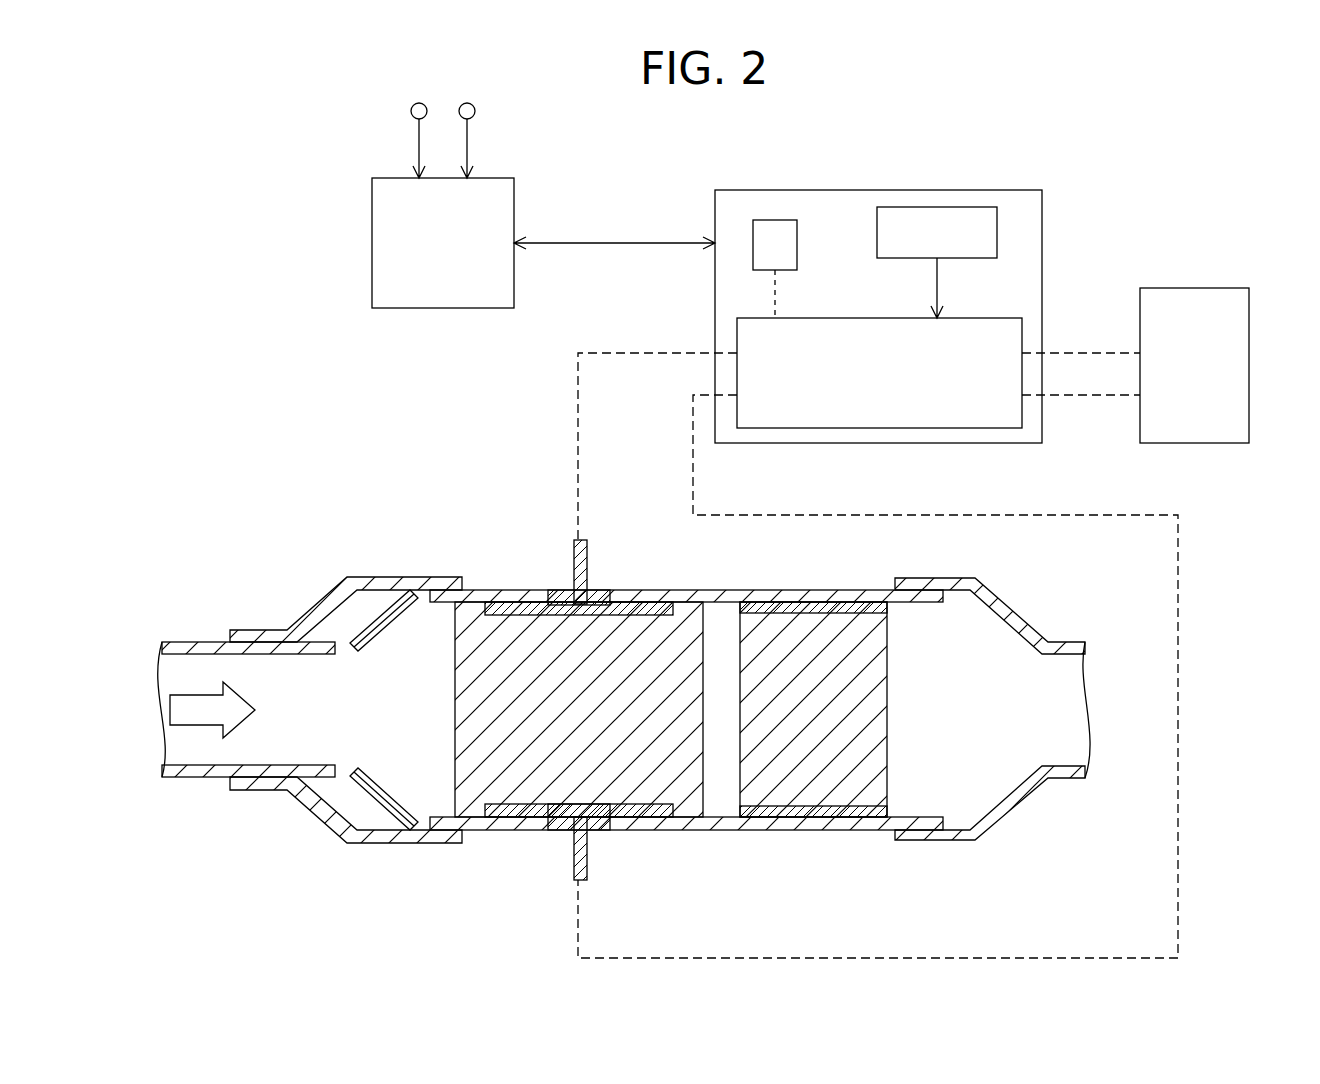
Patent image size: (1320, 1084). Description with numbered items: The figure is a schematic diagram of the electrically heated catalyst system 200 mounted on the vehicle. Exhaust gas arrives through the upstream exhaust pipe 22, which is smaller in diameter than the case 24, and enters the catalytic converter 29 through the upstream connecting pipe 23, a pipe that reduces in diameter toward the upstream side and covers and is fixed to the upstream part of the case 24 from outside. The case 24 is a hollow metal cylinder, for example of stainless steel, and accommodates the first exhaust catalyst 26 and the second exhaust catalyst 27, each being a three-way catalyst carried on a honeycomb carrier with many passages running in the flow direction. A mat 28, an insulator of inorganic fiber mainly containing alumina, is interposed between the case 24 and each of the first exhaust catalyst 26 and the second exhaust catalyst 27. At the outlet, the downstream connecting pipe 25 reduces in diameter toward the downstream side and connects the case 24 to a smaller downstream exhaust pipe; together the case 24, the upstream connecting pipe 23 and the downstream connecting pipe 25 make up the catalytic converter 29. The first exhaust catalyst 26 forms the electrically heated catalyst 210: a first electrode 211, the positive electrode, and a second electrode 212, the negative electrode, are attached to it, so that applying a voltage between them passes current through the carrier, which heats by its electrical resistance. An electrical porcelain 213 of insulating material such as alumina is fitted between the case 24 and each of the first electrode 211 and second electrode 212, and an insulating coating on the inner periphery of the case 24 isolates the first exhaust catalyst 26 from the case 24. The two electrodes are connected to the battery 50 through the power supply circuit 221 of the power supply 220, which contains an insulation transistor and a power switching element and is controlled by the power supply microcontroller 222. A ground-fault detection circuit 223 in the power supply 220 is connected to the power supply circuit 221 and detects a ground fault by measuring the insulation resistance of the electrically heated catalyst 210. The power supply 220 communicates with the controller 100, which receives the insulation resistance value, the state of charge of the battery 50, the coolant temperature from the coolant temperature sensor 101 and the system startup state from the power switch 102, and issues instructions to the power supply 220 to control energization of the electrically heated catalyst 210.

The upstream exhaust pipe 22 is at (190, 640).
The upstream connecting pipe 23 is at (315, 820).
The case 24 is at (745, 830).
The downstream connecting pipe 25 is at (1005, 815).
The first exhaust catalyst 26 is at (455, 640).
The second exhaust catalyst 27 is at (885, 695).
The mat 28 is at (462, 800).
The catalytic converter 29 is at (495, 871).
The battery 50 is at (1195, 444).
The controller 100 is at (415, 310).
The coolant temperature sensor 101 is at (410, 111).
The power switch 102 is at (476, 111).
The electrically heated catalyst system 200 is at (516, 459).
The electrically heated catalyst 210 is at (430, 720).
The first electrode 211 is at (588, 566).
The second electrode 212 is at (588, 846).
The electrical porcelain 213 is at (560, 597).
The power supply 220 is at (909, 317).
The power supply circuit 221 is at (880, 429).
The power supply microcontroller 222 is at (998, 230).
The ground-fault detection circuit 223 is at (775, 218).